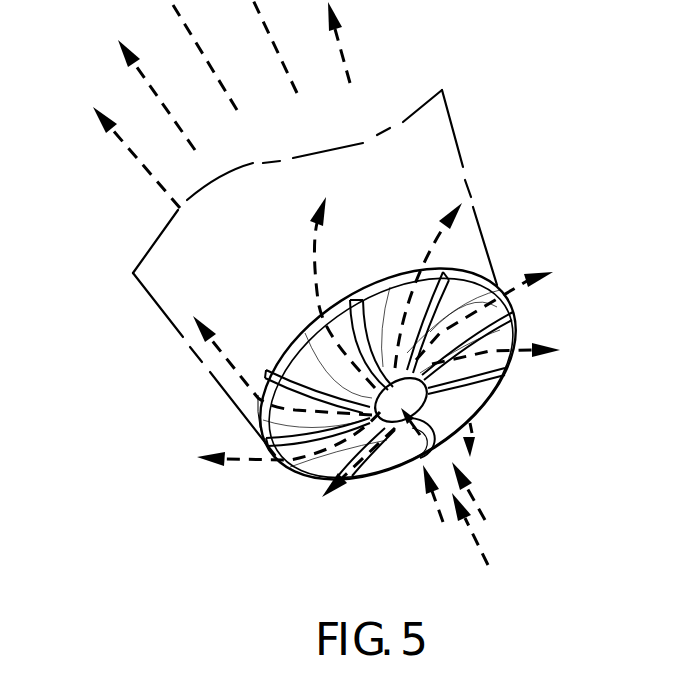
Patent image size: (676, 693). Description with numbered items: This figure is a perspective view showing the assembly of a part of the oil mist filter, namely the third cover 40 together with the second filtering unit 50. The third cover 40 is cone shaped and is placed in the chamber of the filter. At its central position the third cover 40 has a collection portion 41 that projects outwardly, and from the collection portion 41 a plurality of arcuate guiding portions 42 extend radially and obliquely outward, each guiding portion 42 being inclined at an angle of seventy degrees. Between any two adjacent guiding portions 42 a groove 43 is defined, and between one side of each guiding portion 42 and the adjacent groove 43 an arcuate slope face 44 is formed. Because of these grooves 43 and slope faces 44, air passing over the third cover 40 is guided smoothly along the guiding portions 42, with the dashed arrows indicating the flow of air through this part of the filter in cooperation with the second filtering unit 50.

The third cover 40 is at (299, 497).
The collection portion 41 is at (400, 407).
The guiding portion 42 is at (292, 445).
The groove 43 is at (265, 390).
The arcuate slope face 44 is at (262, 410).
The second filtering unit 50 is at (130, 307).